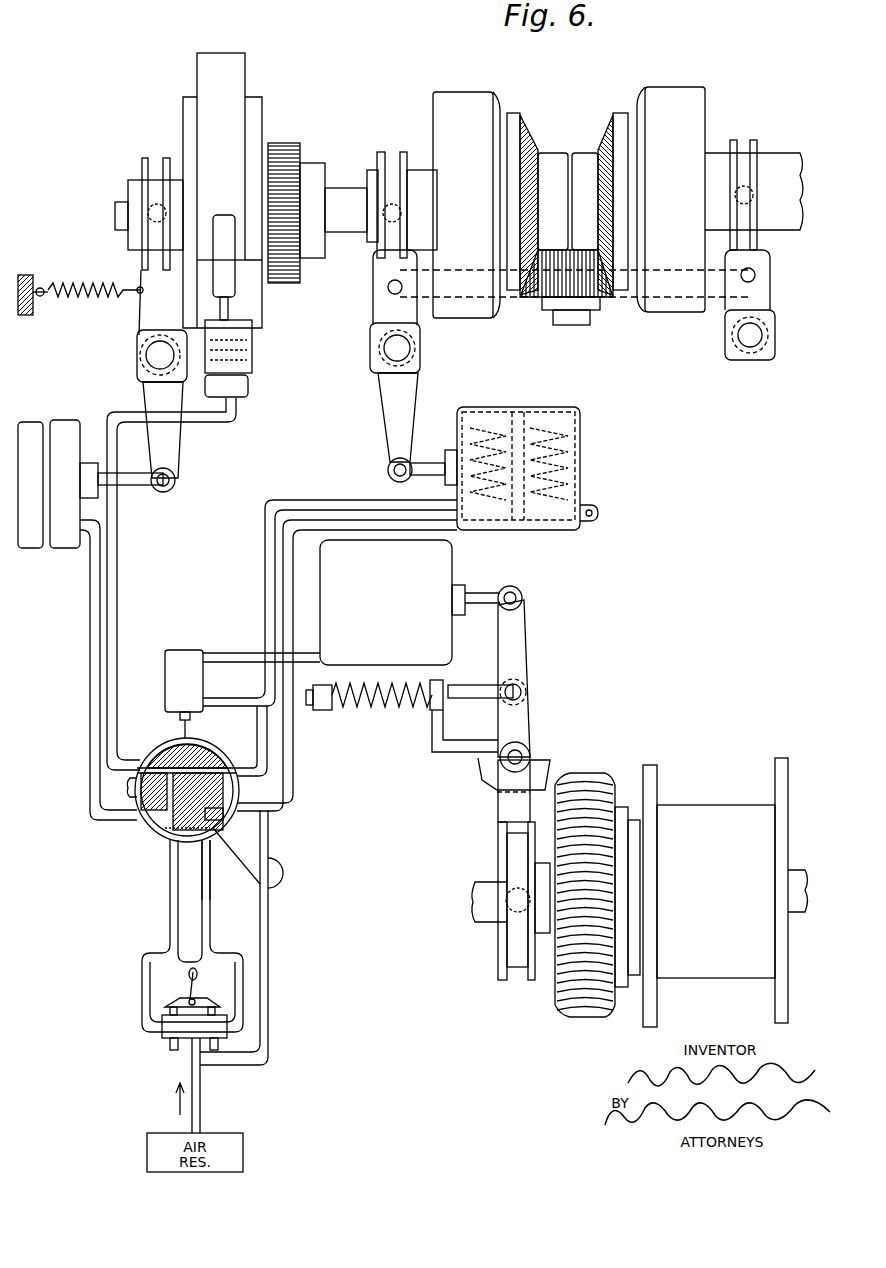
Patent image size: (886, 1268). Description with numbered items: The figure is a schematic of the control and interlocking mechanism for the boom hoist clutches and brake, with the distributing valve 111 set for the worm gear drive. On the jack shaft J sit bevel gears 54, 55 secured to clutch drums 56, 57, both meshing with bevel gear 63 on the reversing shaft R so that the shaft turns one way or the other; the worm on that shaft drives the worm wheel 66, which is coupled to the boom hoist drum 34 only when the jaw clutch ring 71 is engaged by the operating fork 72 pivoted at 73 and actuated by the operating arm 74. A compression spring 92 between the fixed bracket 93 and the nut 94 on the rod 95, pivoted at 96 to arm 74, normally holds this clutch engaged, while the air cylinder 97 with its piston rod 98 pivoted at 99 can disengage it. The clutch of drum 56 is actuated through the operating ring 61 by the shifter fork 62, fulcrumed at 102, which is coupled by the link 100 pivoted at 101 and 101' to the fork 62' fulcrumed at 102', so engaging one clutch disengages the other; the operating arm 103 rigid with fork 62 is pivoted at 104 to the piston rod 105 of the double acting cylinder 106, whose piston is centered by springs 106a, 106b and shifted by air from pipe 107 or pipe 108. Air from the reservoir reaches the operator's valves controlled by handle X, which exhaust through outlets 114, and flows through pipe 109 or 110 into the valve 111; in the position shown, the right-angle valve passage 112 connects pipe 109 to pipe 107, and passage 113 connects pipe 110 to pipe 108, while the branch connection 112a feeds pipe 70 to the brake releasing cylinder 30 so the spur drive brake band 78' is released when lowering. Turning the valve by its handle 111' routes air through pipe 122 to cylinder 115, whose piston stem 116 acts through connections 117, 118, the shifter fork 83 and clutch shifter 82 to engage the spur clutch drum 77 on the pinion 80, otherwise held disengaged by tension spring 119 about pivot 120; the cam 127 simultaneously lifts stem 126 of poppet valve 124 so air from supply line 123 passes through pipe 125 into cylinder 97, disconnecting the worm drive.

The spur drive brake band 78' is at (221, 142).
The clutch drum 77 is at (183, 110).
The clutch shifter 82 is at (152, 160).
The jack shaft J is at (115, 212).
The shifter fork 83 is at (139, 288).
The tension spring 119 is at (92, 298).
The pivot 120 is at (146, 345).
The connection 118 is at (146, 398).
The connection 117 is at (160, 490).
The piston stem 116 is at (132, 472).
The cylinder 115 is at (65, 425).
The pipe 70 is at (198, 422).
The brake releasing cylinder 30 is at (248, 387).
The pinion 80 is at (290, 143).
The operating ring 61 is at (392, 152).
The clutch drum 56 is at (466, 92).
The bevel gear 54 is at (522, 115).
The bevel gear 55 is at (607, 113).
The bevel gear 63 is at (605, 300).
The reversing shaft R is at (590, 318).
The link 100 is at (514, 300).
The clutch drum 57 is at (672, 87).
The pivot 101 is at (367, 285).
The shifter fork 62 is at (379, 287).
The fulcrum 102 is at (413, 348).
The operating arm 103 is at (405, 385).
The pivot 104 is at (405, 480).
The piston rod 105 is at (425, 462).
The double acting cylinder 106 is at (520, 407).
The spring 106a is at (478, 430).
The spring 106b is at (560, 430).
The pipe 107 is at (378, 496).
The pipe 108 is at (460, 530).
The air cylinder 97 is at (328, 603).
The piston rod 98 is at (482, 605).
The pivot 99 is at (522, 600).
The operating arm 74 is at (527, 650).
The pivot 96 is at (526, 692).
The rod 95 is at (475, 698).
The compression spring 92 is at (385, 705).
The nut 94 is at (320, 710).
The fixed bracket 93 is at (432, 745).
The pivot 73 is at (525, 750).
The operating fork 72 is at (498, 802).
The jaw clutch ring 71 is at (500, 980).
The worm wheel 66 is at (585, 1018).
The boom hoist drum 34 is at (695, 978).
The pivot 101' is at (773, 263).
The shifter fork 62' is at (763, 280).
The fulcrum 102' is at (769, 335).
The pipe 122 is at (92, 662).
The pipe 125 is at (255, 655).
The poppet valve 124 is at (165, 688).
The poppet valve stem 126 is at (192, 718).
The right-angle valve passage 112 is at (162, 815).
The branch connection 112a is at (160, 760).
The distributing valve 111 is at (196, 748).
The right-angle valve passage 113 is at (228, 822).
The handle 111' is at (299, 864).
The cam 127 is at (128, 790).
The pipe 109 is at (170, 887).
The pipe 110 is at (212, 900).
The supply line 123 is at (272, 968).
The exhaust outlets 114 is at (170, 1045).
The handle X is at (190, 975).